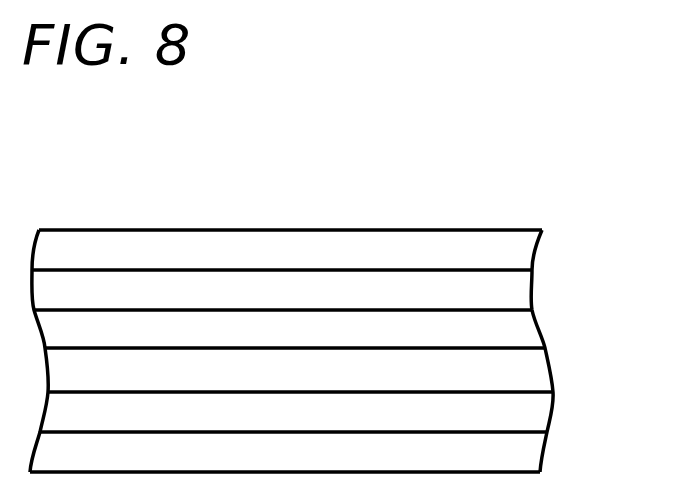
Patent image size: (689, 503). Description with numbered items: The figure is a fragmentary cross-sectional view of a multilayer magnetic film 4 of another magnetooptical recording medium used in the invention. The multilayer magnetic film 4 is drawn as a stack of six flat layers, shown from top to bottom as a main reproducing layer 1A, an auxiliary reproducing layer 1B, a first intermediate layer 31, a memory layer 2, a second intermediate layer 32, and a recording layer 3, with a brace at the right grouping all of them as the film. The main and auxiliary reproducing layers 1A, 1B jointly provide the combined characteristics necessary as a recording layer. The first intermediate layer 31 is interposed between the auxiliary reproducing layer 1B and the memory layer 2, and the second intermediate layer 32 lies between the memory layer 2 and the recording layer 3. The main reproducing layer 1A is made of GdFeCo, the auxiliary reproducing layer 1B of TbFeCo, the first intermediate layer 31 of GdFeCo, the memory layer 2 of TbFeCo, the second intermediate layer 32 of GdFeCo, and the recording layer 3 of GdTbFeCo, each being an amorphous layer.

The main reproducing layer 1A is at (523, 248).
The auxiliary reproducing layer 1B is at (520, 288).
The first intermediate layer 31 is at (523, 328).
The memory layer 2 is at (533, 370).
The second intermediate layer 32 is at (533, 410).
The recording layer 3 is at (530, 452).
The multilayer magnetic film 4 is at (612, 225).